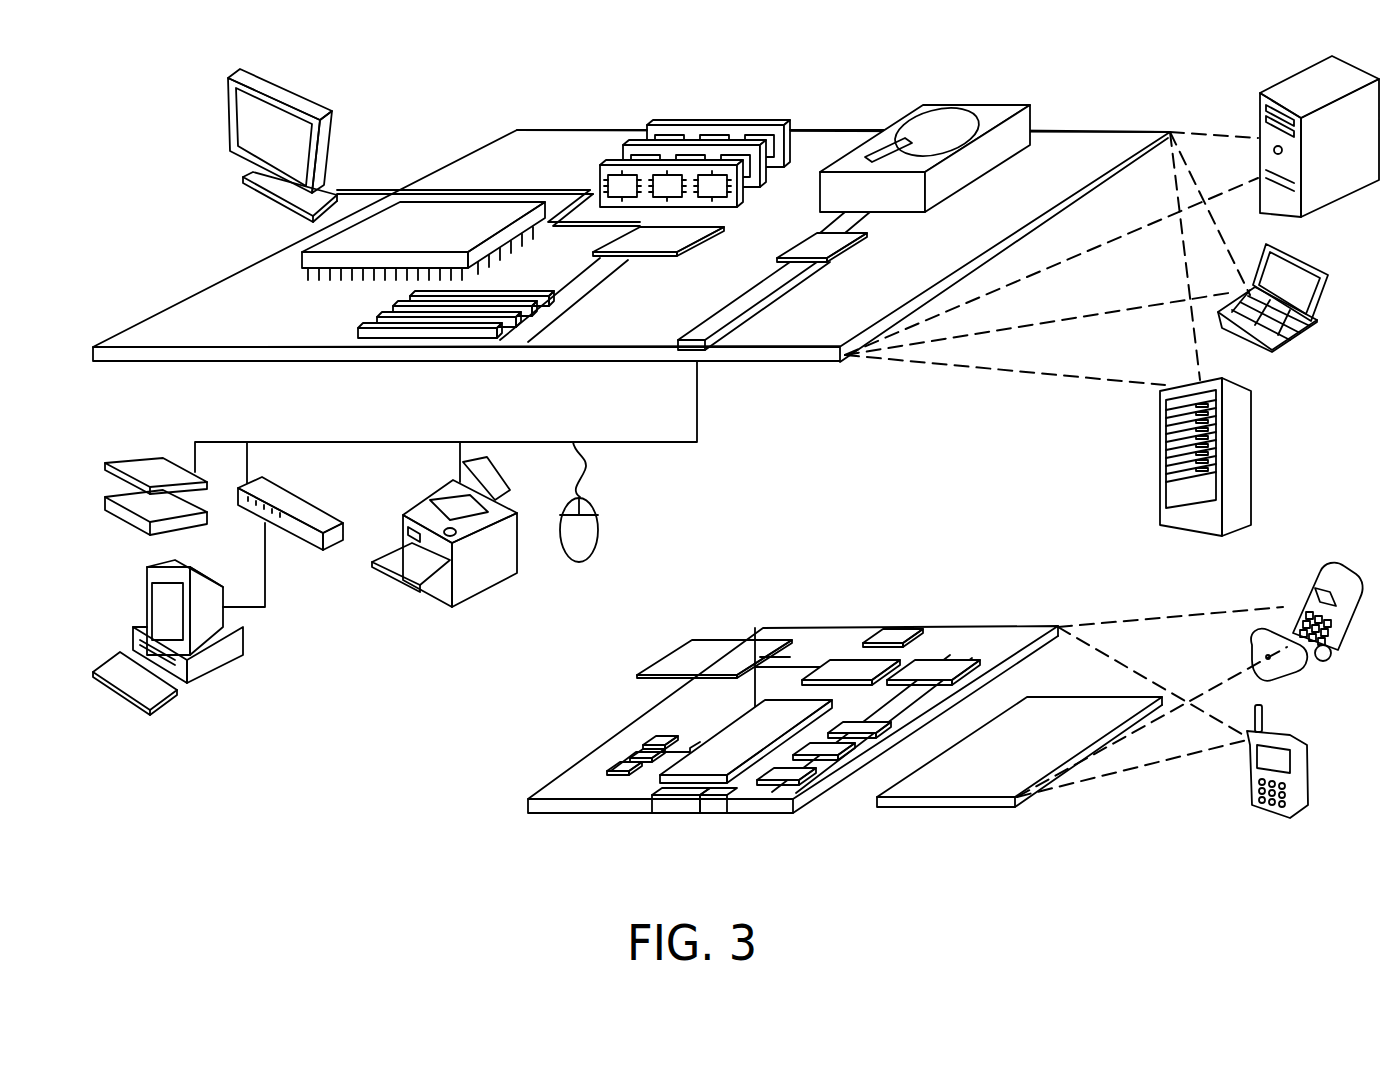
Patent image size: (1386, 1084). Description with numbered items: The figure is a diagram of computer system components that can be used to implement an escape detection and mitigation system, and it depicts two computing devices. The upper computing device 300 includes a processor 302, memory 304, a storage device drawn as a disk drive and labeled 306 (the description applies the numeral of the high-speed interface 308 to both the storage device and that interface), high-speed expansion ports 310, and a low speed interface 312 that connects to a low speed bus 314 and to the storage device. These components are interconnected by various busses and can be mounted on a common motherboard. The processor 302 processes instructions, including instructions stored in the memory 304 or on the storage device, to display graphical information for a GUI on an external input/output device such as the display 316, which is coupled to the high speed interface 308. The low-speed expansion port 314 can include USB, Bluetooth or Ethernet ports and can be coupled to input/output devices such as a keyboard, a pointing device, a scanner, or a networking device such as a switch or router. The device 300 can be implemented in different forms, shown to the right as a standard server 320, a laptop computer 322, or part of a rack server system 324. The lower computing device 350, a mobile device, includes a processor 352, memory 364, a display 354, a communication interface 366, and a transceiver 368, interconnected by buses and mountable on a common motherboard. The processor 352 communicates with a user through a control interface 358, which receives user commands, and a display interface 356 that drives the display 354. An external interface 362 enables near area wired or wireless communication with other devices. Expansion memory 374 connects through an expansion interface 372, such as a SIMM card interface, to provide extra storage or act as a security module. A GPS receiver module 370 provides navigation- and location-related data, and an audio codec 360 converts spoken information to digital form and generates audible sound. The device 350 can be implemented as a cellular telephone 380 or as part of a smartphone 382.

The computing device 300 is at (161, 86).
The processor 302 is at (303, 257).
The memory 304 is at (660, 120).
The hard disk drive 306 is at (915, 107).
The high-speed interface 308 is at (620, 232).
The high-speed expansion ports 310 is at (360, 328).
The low speed interface 312 is at (817, 242).
The low speed bus 314 is at (700, 352).
The display 316 is at (292, 92).
The standard server 320 is at (1260, 108).
The laptop computer 322 is at (1296, 343).
The rack server system 324 is at (1160, 468).
The computing device 350 is at (497, 778).
The processor 352 is at (722, 765).
The display 354 is at (973, 783).
The display interface 356 is at (787, 777).
The control interface 358 is at (822, 755).
The audio codec 360 is at (855, 735).
The external interface 362 is at (682, 805).
The memory 364 is at (625, 755).
The communication interface 366 is at (845, 660).
The transceiver 368 is at (933, 660).
The GPS receiver module 370 is at (895, 630).
The expansion interface 372 is at (755, 628).
The expansion memory 374 is at (680, 640).
The cellular telephone 380 is at (1300, 580).
The smartphone 382 is at (1247, 775).